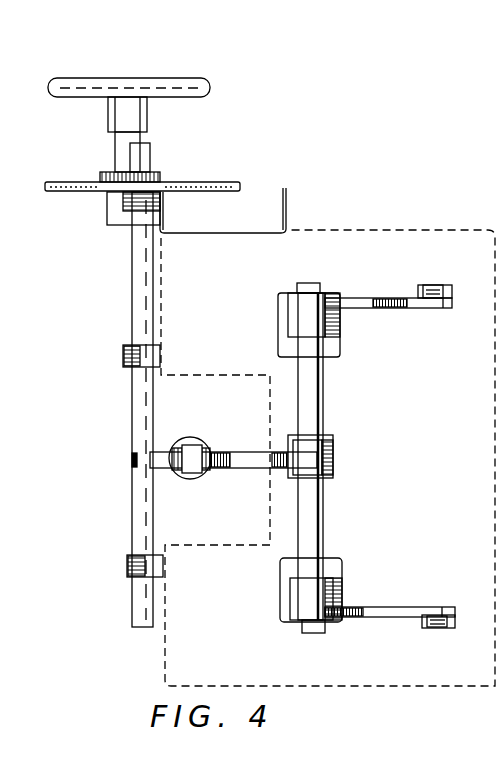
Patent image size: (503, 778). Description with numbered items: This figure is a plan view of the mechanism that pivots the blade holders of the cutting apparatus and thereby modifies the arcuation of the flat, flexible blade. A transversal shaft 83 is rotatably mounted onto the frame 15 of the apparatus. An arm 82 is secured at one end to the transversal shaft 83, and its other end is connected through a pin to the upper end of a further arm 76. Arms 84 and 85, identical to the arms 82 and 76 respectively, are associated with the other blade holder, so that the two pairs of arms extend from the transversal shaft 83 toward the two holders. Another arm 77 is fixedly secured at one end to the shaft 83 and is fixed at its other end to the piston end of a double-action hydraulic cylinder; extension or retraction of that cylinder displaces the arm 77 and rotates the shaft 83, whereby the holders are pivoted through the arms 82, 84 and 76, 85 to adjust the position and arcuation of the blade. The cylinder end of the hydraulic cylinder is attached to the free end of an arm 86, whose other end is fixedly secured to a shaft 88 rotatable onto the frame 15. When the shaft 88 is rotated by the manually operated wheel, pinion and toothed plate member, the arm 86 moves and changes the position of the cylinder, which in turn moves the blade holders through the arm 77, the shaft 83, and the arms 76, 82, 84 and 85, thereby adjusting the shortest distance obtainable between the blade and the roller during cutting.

The frame 15 is at (484, 227).
The arm 76 is at (443, 629).
The arm 77 is at (252, 452).
The arm 82 is at (385, 607).
The transversal shaft 83 is at (317, 410).
The arm 84 is at (368, 298).
The arm 85 is at (440, 285).
The arm 86 is at (168, 450).
The shaft 88 is at (142, 489).